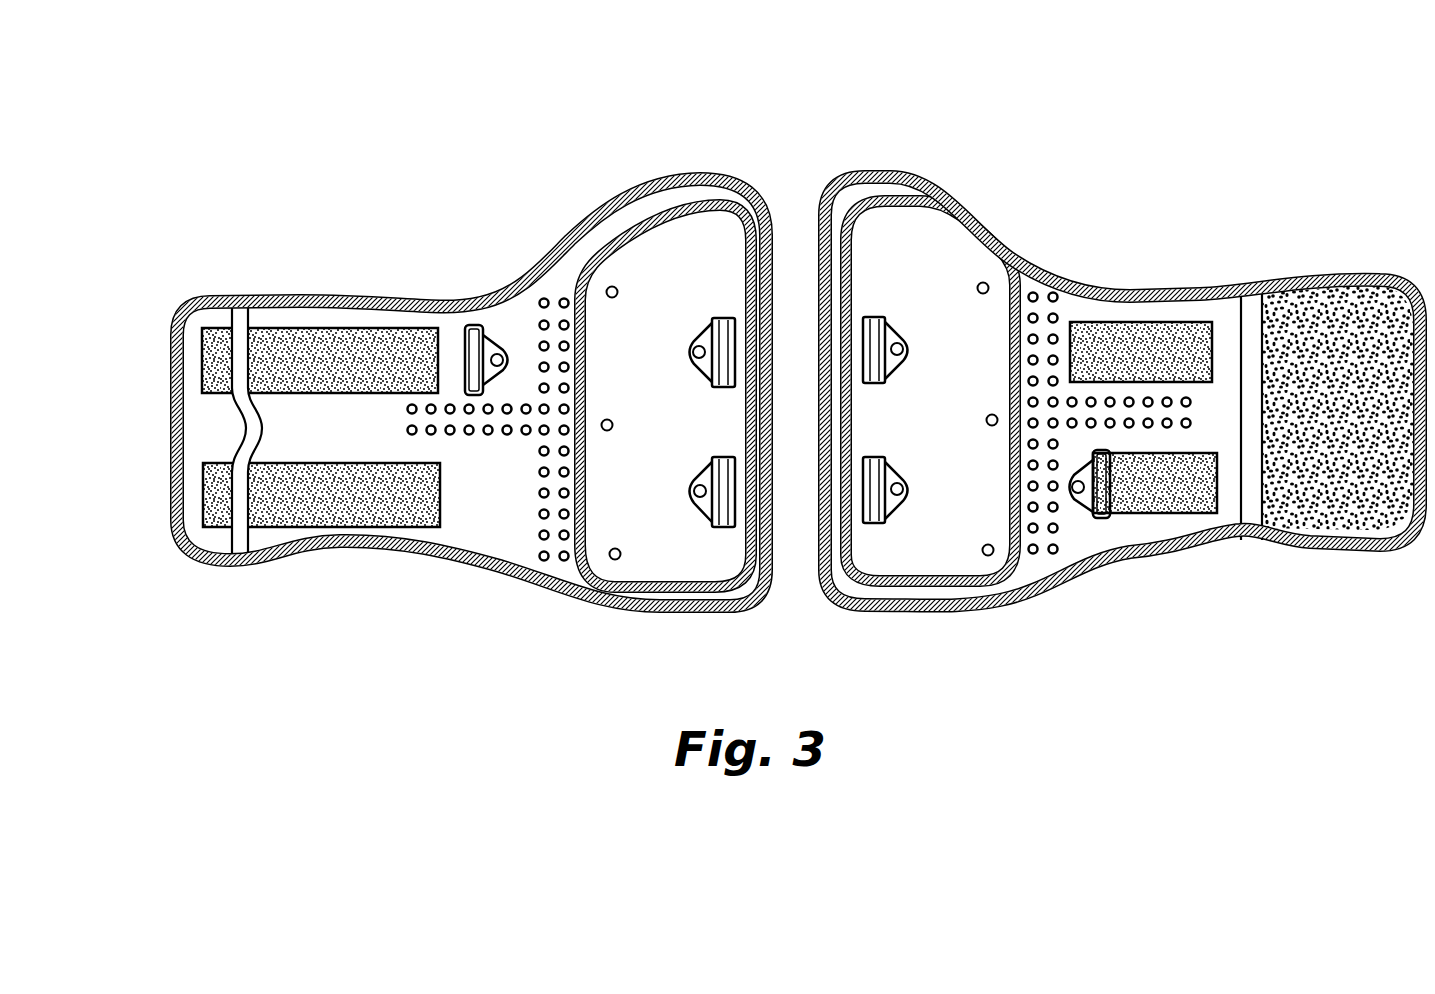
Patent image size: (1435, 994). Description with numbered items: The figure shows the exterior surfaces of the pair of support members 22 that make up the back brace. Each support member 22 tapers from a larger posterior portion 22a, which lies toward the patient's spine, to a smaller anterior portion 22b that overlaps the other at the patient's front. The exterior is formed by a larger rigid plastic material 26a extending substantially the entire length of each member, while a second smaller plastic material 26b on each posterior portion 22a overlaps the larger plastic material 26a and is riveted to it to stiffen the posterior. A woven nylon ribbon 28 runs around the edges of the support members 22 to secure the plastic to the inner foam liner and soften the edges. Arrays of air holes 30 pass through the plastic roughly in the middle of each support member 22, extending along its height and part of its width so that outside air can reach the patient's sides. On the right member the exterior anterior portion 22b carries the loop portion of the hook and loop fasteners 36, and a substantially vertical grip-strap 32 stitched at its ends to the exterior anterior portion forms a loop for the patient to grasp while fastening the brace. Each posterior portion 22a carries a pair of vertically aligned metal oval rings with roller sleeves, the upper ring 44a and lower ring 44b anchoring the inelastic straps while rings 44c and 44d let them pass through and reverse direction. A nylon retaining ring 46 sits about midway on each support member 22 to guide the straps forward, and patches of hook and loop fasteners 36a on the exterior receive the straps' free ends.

The support member 22 is at (772, 128).
The posterior portion 22a is at (667, 458).
The anterior portion 22b is at (283, 455).
The larger plastic material 26a is at (304, 318).
The second smaller plastic material 26b is at (678, 248).
The woven nylon ribbon 28 is at (705, 176).
The air holes 30 is at (488, 436).
The grip-strap 32 is at (247, 417).
The hook and loop fasteners 36 is at (1370, 363).
The hook and loop fasteners 36a is at (287, 347).
The upper ring 44a is at (700, 340).
The lower ring 44b is at (912, 497).
The ring 44c is at (895, 337).
The ring 44d is at (707, 507).
The nylon retaining ring 46 is at (478, 332).